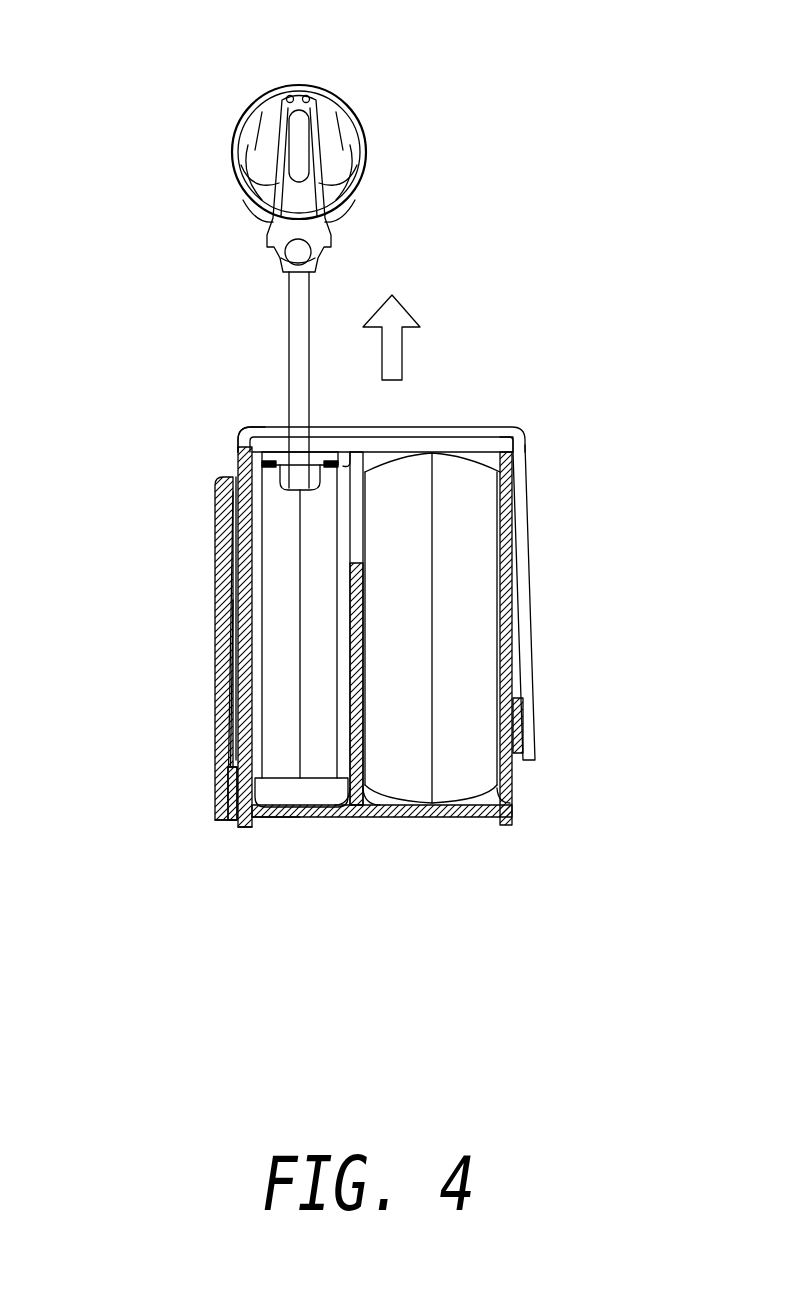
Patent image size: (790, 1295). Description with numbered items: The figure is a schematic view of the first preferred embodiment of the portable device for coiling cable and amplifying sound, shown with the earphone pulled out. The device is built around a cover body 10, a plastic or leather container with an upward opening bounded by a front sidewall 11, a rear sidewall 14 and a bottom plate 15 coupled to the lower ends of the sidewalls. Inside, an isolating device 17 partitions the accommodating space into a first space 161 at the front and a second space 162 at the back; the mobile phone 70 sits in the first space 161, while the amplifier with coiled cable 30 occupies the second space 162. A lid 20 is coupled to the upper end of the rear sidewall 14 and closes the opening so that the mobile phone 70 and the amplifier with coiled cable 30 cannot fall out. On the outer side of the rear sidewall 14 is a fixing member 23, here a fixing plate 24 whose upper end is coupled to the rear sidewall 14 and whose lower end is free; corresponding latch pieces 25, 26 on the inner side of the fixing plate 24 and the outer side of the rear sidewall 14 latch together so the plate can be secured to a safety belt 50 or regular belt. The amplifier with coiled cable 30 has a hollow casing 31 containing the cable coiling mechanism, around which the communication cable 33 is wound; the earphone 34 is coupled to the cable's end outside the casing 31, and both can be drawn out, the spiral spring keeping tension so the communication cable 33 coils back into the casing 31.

The cover body 10 is at (600, 631).
The front sidewall 11 is at (510, 605).
The rear sidewall 14 is at (233, 503).
The bottom plate 15 is at (380, 812).
The isolating device 17 is at (352, 800).
The lid 20 is at (388, 433).
The fixing member 23 is at (212, 557).
The fixing plate 24 is at (222, 622).
The latch piece 25 is at (217, 795).
The latch piece 26 is at (233, 818).
The amplifier with coiled cable 30 is at (270, 832).
The casing 31 is at (285, 715).
The communication cable 33 is at (297, 327).
The earphone 34 is at (255, 145).
The safety belt 50 is at (227, 680).
The mobile phone 70 is at (455, 785).
The first space 161 is at (490, 453).
The second space 162 is at (250, 445).